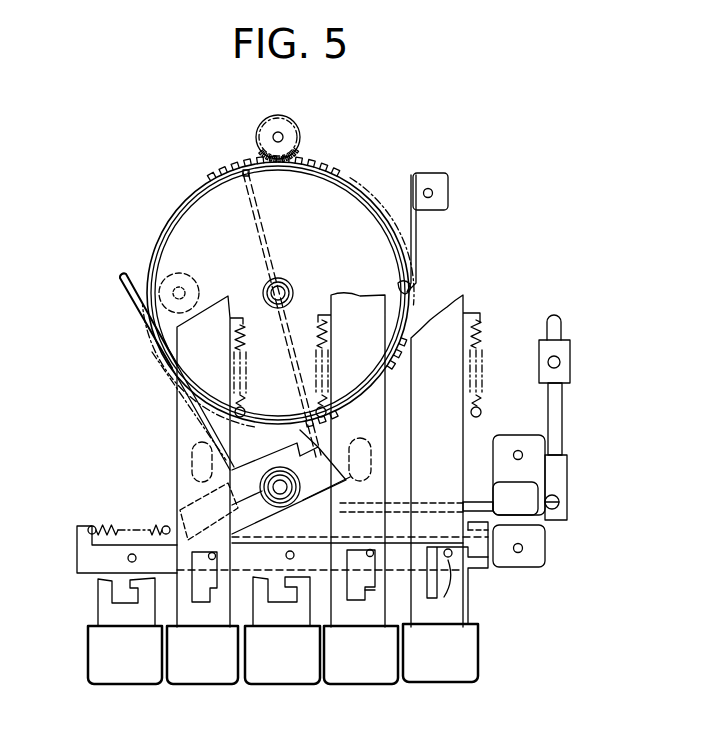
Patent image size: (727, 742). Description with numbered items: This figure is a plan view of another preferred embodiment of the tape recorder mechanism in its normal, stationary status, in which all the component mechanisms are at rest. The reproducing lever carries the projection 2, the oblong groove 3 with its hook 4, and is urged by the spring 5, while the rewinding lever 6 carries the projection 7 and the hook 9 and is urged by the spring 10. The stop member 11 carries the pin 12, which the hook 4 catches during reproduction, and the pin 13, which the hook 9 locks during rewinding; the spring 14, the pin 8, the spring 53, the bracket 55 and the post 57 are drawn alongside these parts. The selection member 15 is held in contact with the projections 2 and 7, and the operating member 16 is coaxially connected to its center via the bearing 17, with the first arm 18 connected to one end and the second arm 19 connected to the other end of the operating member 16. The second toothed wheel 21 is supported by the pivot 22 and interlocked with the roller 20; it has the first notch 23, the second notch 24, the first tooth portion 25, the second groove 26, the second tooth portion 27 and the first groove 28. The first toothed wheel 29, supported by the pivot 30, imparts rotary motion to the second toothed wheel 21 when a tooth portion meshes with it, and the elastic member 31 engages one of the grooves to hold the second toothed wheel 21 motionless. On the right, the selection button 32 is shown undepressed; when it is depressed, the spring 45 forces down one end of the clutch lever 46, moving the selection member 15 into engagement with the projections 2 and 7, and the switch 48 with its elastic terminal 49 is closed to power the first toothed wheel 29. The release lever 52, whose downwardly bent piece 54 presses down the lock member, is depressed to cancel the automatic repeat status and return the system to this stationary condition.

The projection 2 is at (367, 460).
The oblong groove 3 is at (345, 558).
The hook 4 is at (373, 587).
The spring 5 is at (327, 342).
The rewinding lever 6 is at (215, 617).
The projection 7 is at (192, 458).
The pin 8 is at (192, 587).
The hook 9 is at (212, 560).
The spring 10 is at (230, 337).
The stop member 11 is at (85, 565).
The pin 12 is at (370, 552).
The pin 13 is at (217, 555).
The spring 14 is at (103, 523).
The selection member 15 is at (310, 455).
The operating member 16 is at (267, 457).
The bearing 17 is at (275, 486).
The first arm 18 is at (120, 283).
The second arm 19 is at (255, 192).
The roller 20 is at (182, 272).
The second toothed wheel 21 is at (220, 203).
The pivot 22 is at (280, 277).
The first notch 23 is at (298, 160).
The second notch 24 is at (366, 442).
The first tooth portion 25 is at (183, 200).
The second groove 26 is at (170, 360).
The second tooth portion 27 is at (378, 200).
The first groove 28 is at (398, 292).
The first toothed wheel 29 is at (282, 122).
The pivot 30 is at (276, 135).
The elastic member 31 is at (445, 185).
The selection button 32 is at (528, 487).
The spring 45 is at (560, 505).
The clutch lever 46 is at (480, 503).
The switch 48 is at (568, 348).
The elastic terminal 49 is at (553, 395).
The release lever 52 is at (443, 608).
The spring 53 is at (480, 368).
The downwardly bent piece 54 is at (473, 518).
The bracket 55 is at (452, 560).
The post 57 is at (450, 585).